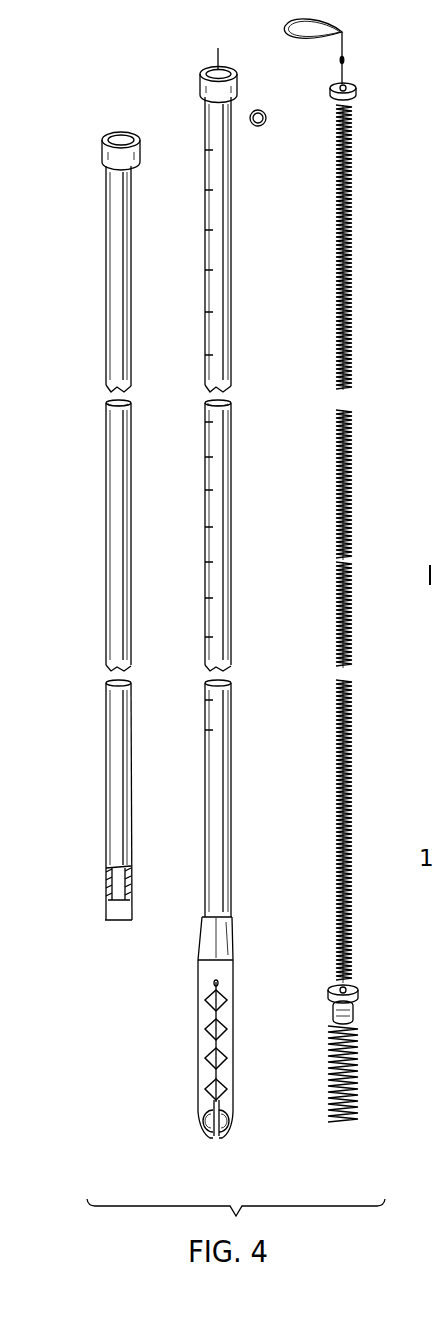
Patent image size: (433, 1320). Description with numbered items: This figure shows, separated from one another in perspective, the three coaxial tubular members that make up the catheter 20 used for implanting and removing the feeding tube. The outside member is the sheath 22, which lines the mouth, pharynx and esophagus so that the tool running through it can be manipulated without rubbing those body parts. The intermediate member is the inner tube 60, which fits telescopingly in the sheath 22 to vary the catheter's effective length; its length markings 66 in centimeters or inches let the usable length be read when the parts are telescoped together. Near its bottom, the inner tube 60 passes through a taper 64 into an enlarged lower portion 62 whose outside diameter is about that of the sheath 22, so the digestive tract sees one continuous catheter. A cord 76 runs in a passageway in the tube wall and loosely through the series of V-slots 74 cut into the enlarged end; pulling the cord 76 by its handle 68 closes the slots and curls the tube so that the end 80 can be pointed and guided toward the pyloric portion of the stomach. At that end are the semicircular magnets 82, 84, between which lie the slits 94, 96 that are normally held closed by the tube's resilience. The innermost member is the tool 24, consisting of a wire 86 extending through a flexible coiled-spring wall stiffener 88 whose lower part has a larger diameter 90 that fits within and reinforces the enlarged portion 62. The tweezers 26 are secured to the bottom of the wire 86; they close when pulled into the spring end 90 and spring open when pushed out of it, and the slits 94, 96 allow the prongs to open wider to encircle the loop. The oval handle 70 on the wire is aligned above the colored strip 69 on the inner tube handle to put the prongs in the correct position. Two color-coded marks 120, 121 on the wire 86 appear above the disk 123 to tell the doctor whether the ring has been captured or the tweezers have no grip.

The catheter 20 is at (96, 506).
The sheath 22 is at (106, 190).
The tool 24 is at (328, 242).
The tweezers 26 is at (357, 1018).
The inner tube 60 is at (212, 190).
The enlarged lower end of inner tube 62 is at (198, 1040).
The taper 64 is at (194, 917).
The length markings 66 is at (207, 600).
The cord handle 68 is at (262, 126).
The colored strip 69 is at (214, 82).
The oval handle 70 is at (284, 25).
The V-slots 74 is at (207, 1055).
The cord 76 is at (215, 972).
The end of inner tube 80 is at (206, 1142).
The semicircular magnet 82 is at (204, 1132).
The semicircular magnet 84 is at (236, 1126).
The wire 86 is at (336, 650).
The wall stiffener 88 is at (336, 602).
The enlarged spring end 90 is at (358, 1088).
The slit 94 is at (218, 1112).
The slit 96 is at (221, 1138).
The colored mark 120 is at (346, 62).
The colored mark 121 is at (347, 87).
The disk 123 is at (356, 98).